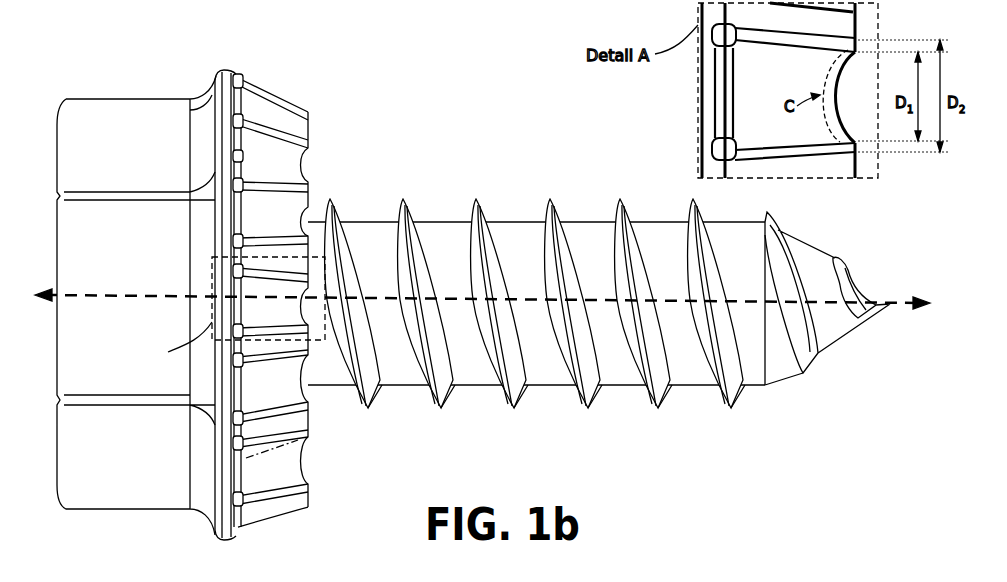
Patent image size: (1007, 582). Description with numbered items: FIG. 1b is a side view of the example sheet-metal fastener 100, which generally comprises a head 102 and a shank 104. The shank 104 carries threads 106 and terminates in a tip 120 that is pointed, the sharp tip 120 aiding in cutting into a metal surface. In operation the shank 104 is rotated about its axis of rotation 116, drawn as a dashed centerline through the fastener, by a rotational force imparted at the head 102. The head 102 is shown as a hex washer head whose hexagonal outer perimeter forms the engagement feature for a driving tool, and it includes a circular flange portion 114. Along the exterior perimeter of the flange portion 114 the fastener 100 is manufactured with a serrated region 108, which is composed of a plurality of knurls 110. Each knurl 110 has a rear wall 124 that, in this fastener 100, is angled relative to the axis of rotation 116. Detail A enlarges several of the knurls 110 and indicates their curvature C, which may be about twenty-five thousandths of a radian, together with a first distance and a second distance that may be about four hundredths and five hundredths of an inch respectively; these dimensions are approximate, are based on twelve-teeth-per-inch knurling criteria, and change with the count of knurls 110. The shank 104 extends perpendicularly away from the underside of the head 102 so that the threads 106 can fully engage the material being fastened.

The sheet-metal fastener 100 is at (139, 55).
The head 102 is at (86, 97).
The shank 104 is at (437, 222).
The threads 106 is at (546, 200).
The serrated region 108 is at (194, 62).
The knurls 110 is at (313, 173).
The flange portion 114 is at (210, 122).
The axis of rotation 116 is at (120, 292).
The tip 120 is at (888, 290).
The rear wall 124 is at (300, 437).